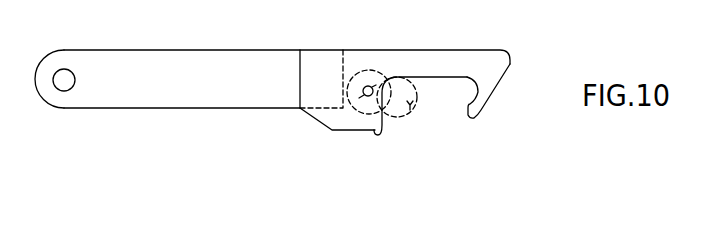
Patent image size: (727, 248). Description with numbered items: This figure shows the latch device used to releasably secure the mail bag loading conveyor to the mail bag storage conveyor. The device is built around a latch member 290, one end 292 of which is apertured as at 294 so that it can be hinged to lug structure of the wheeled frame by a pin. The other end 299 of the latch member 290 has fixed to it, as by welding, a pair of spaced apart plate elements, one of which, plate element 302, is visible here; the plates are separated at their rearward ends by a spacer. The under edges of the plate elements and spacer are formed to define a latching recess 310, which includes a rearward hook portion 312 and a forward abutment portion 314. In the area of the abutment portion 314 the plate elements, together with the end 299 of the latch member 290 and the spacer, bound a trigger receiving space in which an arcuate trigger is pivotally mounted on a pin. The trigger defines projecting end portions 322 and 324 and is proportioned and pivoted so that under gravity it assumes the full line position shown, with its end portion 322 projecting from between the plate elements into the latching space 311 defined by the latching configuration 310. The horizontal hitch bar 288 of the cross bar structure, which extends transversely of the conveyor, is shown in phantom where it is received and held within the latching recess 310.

The horizontal hitch bar 288 is at (416, 90).
The latch member 290 is at (241, 93).
The end of latch member 292 is at (85, 57).
The aperture 294 is at (76, 81).
The other end of latch member 299 is at (292, 52).
The plate element 302 is at (364, 58).
The latching recess 310 is at (462, 75).
The latching space 311 is at (440, 104).
The rearward hook portion 312 is at (467, 103).
The forward abutment portion 314 is at (393, 98).
The projecting end portion of trigger 322 is at (396, 79).
The projecting end portion of trigger 324 is at (377, 135).